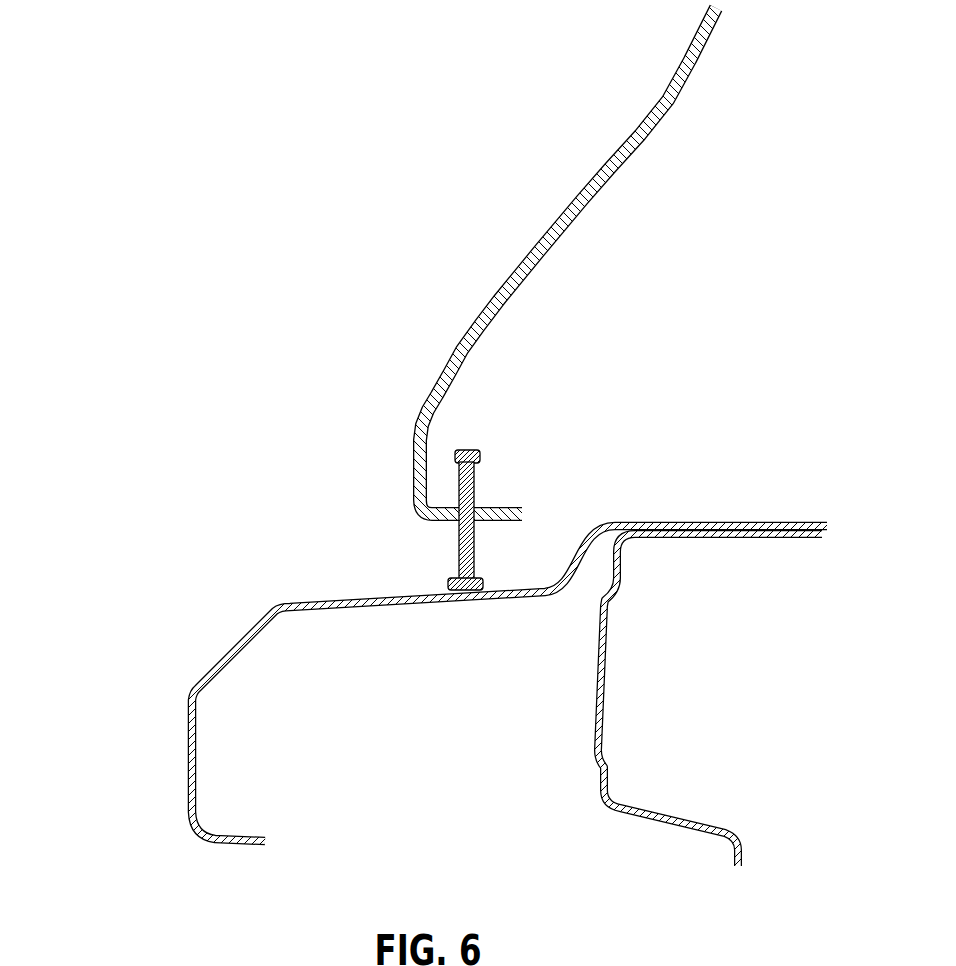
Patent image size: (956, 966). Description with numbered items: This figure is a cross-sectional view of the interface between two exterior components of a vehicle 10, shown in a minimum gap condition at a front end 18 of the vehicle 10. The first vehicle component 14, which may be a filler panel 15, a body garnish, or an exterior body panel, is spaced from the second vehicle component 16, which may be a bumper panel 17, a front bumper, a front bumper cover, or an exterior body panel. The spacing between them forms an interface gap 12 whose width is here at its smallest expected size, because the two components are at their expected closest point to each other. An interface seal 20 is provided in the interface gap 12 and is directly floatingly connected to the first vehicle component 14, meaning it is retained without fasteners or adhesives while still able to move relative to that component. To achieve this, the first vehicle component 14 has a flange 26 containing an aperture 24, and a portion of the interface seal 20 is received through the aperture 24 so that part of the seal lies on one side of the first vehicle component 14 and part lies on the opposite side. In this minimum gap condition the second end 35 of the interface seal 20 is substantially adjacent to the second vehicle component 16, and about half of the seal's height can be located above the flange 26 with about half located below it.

The vehicle 10 is at (243, 240).
The interface gap 12 is at (402, 552).
The first vehicle component 14 is at (495, 148).
The filler panel 15 is at (455, 357).
The second vehicle component 16 is at (175, 648).
The bumper panel 17 is at (277, 605).
The front end 18 is at (77, 498).
The interface seal 20 is at (487, 551).
The aperture 24 is at (478, 500).
The flange 26 is at (510, 505).
The second end 35 is at (458, 594).